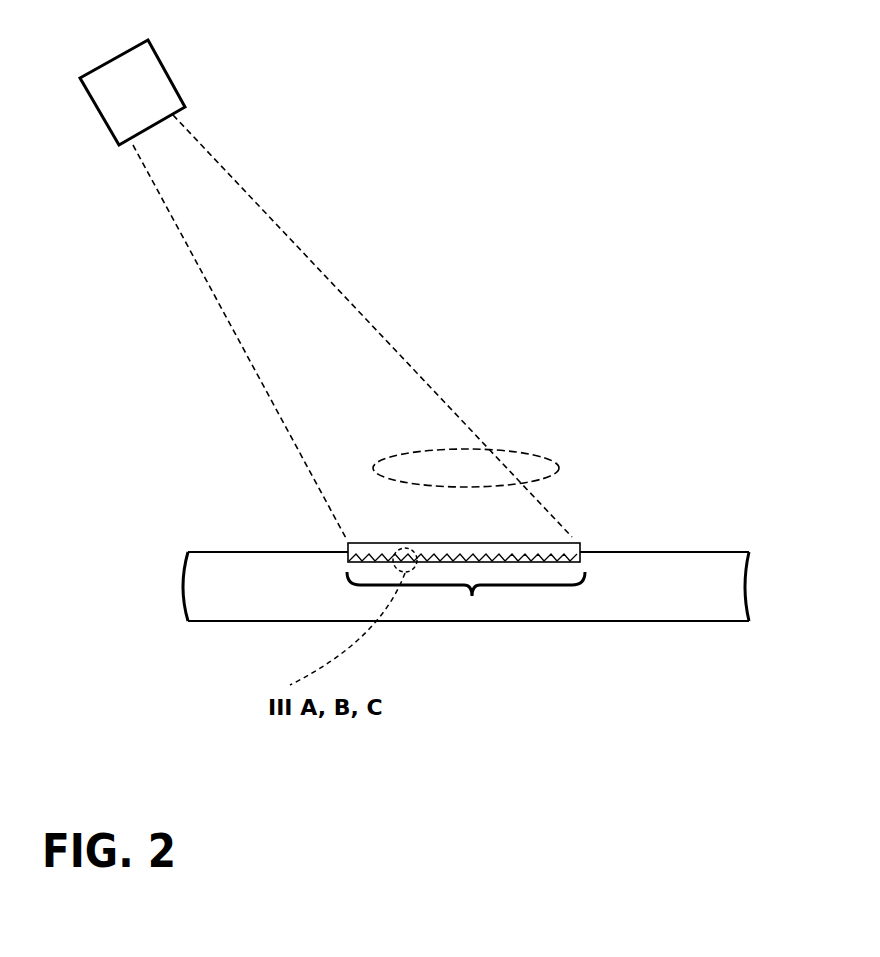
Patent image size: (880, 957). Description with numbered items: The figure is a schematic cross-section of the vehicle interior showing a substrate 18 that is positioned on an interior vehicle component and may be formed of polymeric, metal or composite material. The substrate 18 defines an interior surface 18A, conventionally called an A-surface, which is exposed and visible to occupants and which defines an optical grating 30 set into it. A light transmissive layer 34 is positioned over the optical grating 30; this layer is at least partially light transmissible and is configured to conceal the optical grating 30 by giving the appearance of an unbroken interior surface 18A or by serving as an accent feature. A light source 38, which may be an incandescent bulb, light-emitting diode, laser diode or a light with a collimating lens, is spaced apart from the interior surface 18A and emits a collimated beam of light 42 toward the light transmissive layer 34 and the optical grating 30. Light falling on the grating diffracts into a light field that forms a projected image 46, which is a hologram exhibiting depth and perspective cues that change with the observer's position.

The light source 38 is at (125, 105).
The collimated beam of light 42 is at (305, 252).
The projected image 46 is at (512, 452).
The light transmissive layer 34 is at (548, 543).
The interior surface 18A is at (643, 552).
The substrate 18 is at (656, 603).
The optical grating 30 is at (472, 597).